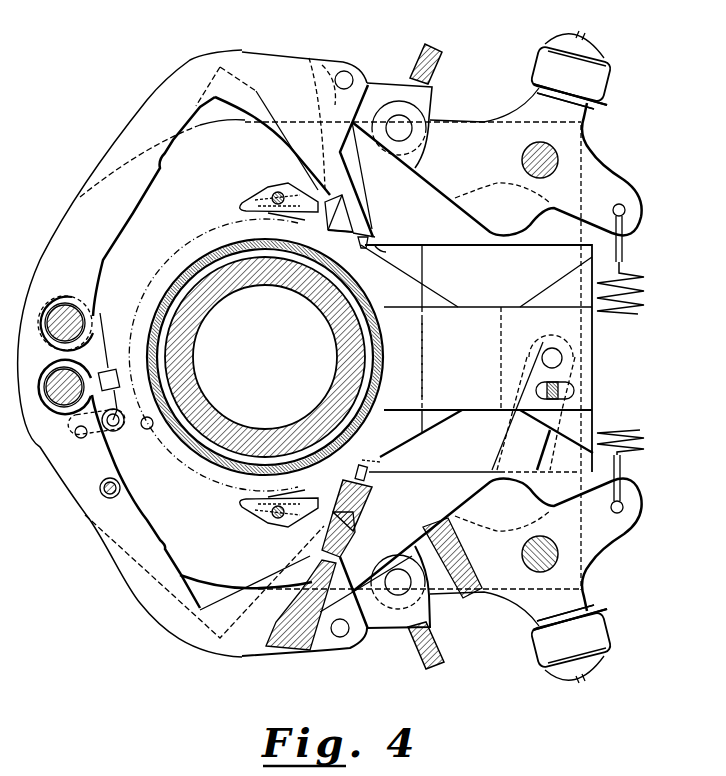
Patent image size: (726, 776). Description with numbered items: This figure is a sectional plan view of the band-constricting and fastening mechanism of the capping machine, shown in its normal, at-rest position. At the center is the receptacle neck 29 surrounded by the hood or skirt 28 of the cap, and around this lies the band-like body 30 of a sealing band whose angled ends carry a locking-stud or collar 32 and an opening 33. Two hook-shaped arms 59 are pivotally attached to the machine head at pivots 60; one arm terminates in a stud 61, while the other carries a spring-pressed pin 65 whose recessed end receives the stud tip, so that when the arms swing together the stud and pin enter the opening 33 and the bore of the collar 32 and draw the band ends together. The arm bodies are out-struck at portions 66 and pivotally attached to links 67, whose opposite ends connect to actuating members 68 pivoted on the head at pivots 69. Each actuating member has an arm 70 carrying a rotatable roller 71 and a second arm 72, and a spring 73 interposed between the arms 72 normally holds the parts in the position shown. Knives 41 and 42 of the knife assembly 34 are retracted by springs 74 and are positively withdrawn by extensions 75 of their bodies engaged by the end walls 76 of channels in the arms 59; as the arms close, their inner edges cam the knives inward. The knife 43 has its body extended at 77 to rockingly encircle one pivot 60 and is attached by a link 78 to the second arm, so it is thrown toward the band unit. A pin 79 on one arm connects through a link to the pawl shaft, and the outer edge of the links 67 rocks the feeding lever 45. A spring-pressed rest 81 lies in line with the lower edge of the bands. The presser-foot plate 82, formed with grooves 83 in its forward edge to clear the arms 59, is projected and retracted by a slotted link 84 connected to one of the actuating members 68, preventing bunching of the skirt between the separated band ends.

The hood or skirt 28 is at (201, 248).
The neck 29 is at (342, 378).
The band-like body 30 is at (214, 472).
The locking-stud or collar 32 is at (376, 458).
The opening 33 is at (388, 254).
The lever assembly 34 is at (228, 192).
The knife 41 is at (345, 228).
The knife 42 is at (366, 506).
The knife 43 is at (112, 370).
The lever 45 is at (434, 44).
The hook-shaped arms 59 is at (151, 104).
The pivot 60 is at (66, 316).
The stud 61 is at (369, 240).
The spring-pressed pin 65 is at (370, 476).
The out-struck portion 66 is at (291, 60).
The links 67 is at (386, 92).
The actuating members 68 is at (481, 357).
The pivot 69 is at (541, 148).
The arm 70 is at (540, 95).
The roller 71 is at (546, 50).
The arm 72 is at (630, 208).
The spring 73 is at (642, 295).
The springs 74 is at (248, 195).
The extensions 75 is at (312, 185).
The end walls 76 is at (358, 190).
The extended body portion 77 is at (102, 330).
The link 78 is at (110, 437).
The pin 79 is at (112, 498).
The spring-pressed rest 81 is at (153, 424).
The plate 82 is at (477, 357).
The grooves 83 is at (421, 372).
The link 84 is at (507, 448).